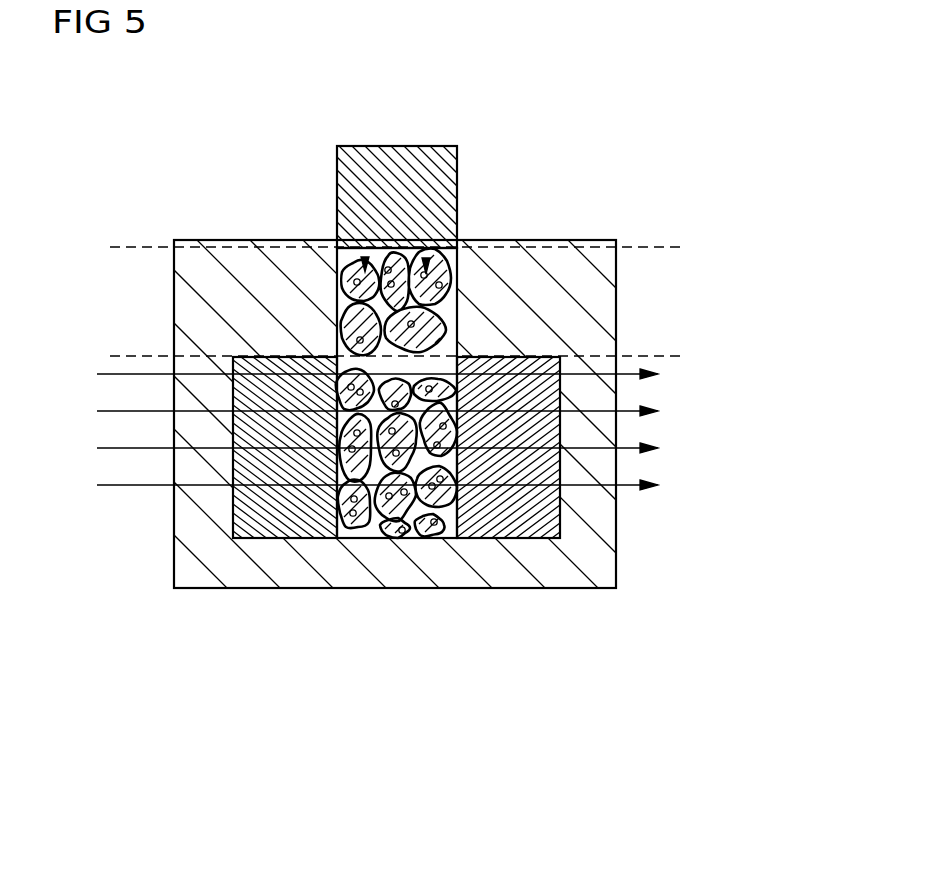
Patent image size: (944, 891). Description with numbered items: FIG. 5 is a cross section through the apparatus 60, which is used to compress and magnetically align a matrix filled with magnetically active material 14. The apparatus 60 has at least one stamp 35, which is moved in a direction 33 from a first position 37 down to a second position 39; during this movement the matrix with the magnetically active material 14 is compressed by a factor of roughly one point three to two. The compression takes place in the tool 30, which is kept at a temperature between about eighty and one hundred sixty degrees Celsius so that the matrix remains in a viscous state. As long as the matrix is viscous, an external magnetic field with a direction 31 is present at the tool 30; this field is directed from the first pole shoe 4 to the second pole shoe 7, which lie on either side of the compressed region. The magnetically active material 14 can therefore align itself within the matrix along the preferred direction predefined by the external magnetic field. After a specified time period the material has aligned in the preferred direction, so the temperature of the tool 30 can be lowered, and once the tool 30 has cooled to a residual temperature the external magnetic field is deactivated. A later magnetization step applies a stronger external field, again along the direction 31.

The first pole shoe 4 is at (267, 515).
The second pole shoe 7 is at (493, 523).
The magnetically active material 14 is at (415, 538).
The tool 30 is at (188, 560).
The direction 31 is at (104, 411).
The direction 33 is at (337, 245).
The stamp 35 is at (337, 182).
The first position 37 is at (142, 246).
The second position 39 is at (131, 355).
The apparatus 60 is at (390, 115).